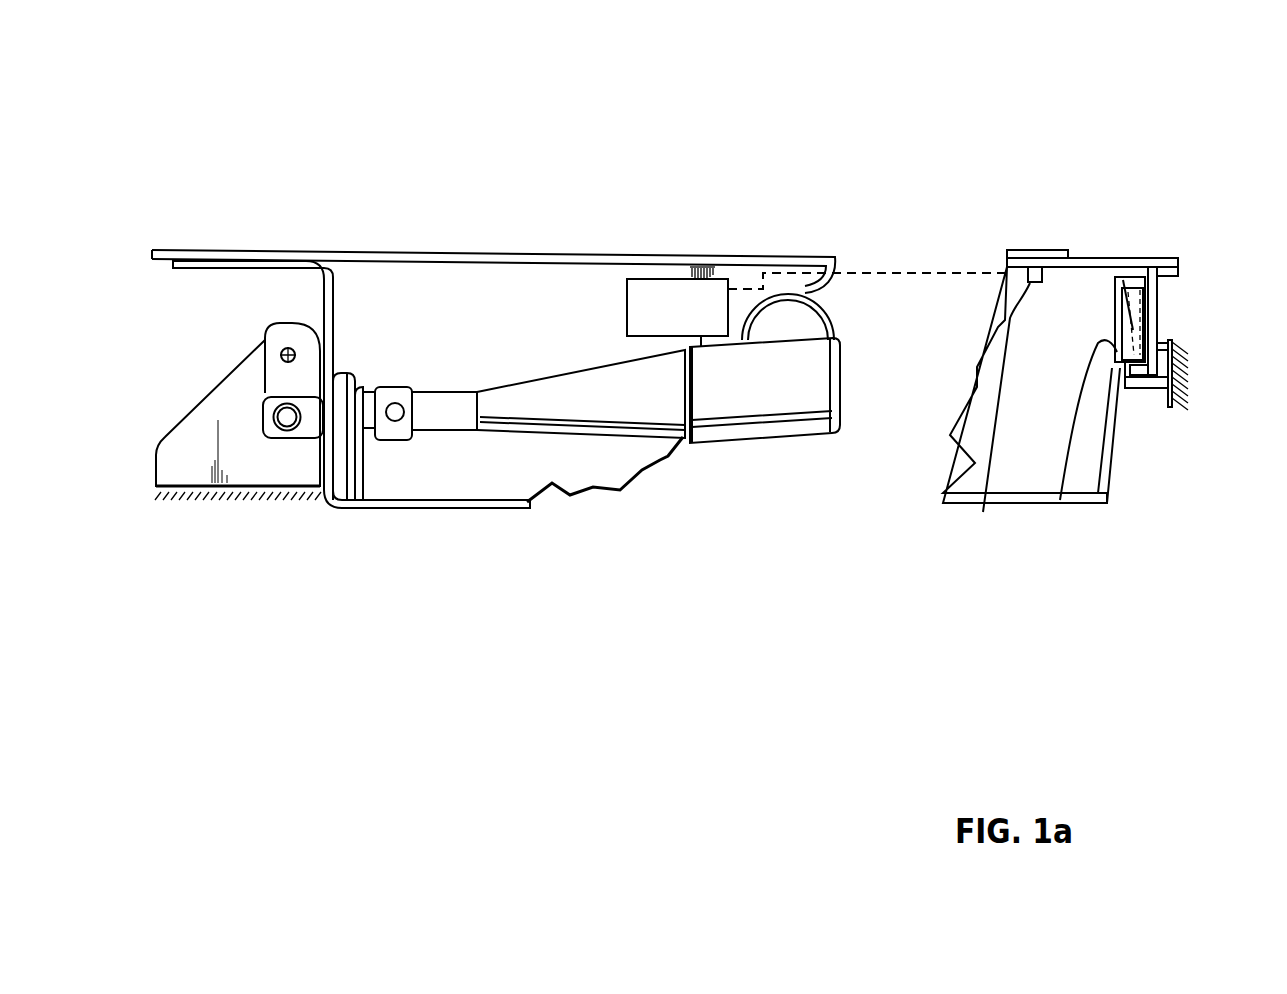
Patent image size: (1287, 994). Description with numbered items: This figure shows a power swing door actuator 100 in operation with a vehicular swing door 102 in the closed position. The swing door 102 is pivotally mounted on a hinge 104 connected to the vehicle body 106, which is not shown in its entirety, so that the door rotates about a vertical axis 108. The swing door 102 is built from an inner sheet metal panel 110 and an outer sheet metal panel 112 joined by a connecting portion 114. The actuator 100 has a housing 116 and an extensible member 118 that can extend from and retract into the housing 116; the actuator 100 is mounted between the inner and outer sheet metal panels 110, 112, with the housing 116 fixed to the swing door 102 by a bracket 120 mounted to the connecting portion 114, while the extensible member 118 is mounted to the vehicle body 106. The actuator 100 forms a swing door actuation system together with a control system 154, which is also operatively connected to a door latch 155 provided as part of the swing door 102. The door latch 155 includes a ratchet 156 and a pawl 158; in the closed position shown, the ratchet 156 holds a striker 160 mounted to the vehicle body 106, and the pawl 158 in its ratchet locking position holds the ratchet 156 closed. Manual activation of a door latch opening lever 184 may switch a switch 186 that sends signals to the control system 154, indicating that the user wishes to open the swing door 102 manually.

The power swing door actuator 100 is at (570, 458).
The vehicular swing door 102 is at (1004, 184).
The hinge 104 is at (278, 362).
The vehicle body 106 is at (256, 525).
The vertical axis 108 is at (281, 351).
The inner sheet metal panel 110 is at (485, 509).
The outer sheet metal panel 112 is at (486, 257).
The connecting portion 114 is at (336, 294).
The housing 116 is at (570, 367).
The extensible member 118 is at (266, 404).
The bracket 120 is at (402, 383).
The control system 154 is at (668, 280).
The door latch 155 is at (1060, 500).
The ratchet 156 is at (1123, 278).
The pawl 158 is at (1143, 293).
The striker 160 is at (1147, 390).
The door latch opening lever 184 is at (1047, 250).
The switch 186 is at (1025, 408).